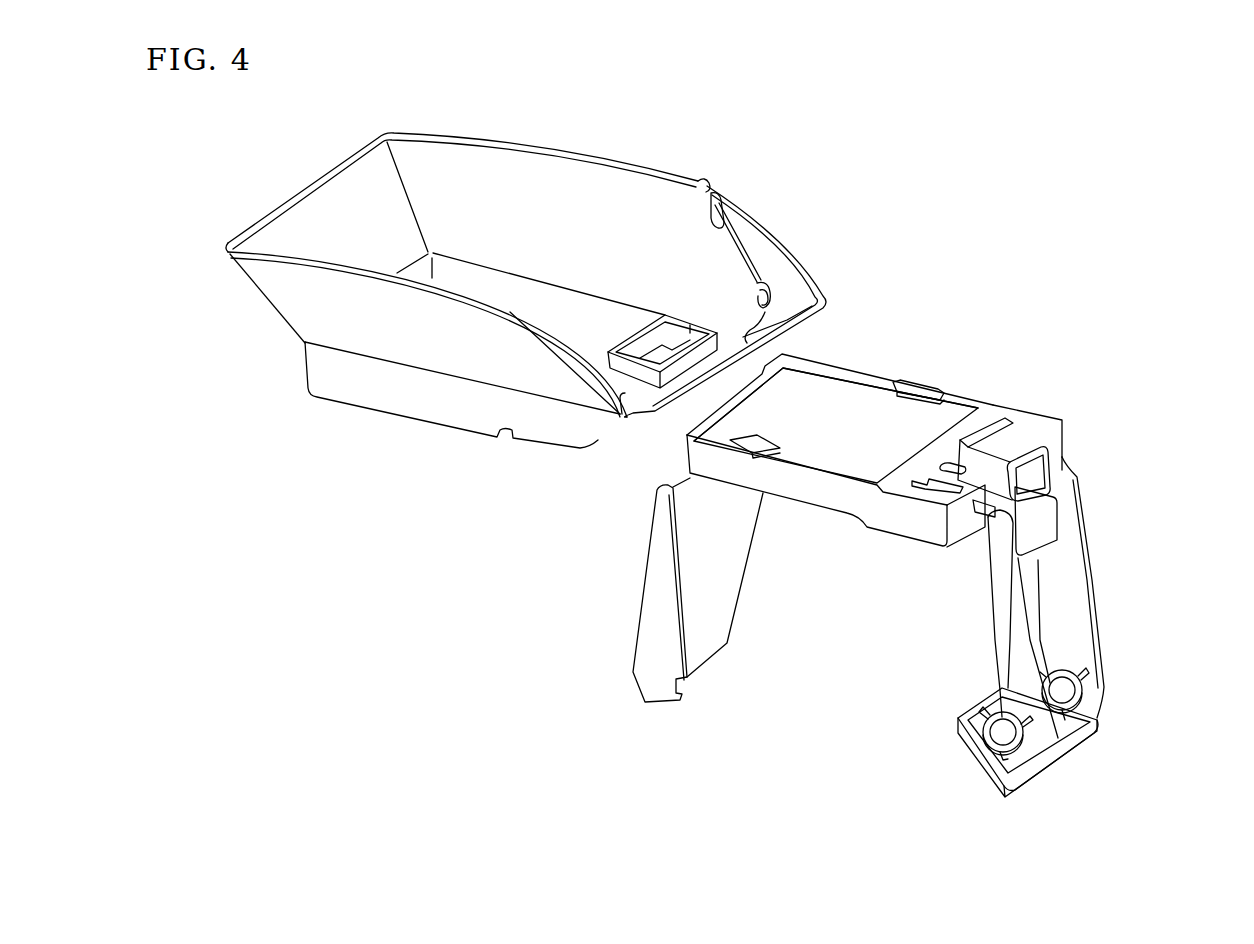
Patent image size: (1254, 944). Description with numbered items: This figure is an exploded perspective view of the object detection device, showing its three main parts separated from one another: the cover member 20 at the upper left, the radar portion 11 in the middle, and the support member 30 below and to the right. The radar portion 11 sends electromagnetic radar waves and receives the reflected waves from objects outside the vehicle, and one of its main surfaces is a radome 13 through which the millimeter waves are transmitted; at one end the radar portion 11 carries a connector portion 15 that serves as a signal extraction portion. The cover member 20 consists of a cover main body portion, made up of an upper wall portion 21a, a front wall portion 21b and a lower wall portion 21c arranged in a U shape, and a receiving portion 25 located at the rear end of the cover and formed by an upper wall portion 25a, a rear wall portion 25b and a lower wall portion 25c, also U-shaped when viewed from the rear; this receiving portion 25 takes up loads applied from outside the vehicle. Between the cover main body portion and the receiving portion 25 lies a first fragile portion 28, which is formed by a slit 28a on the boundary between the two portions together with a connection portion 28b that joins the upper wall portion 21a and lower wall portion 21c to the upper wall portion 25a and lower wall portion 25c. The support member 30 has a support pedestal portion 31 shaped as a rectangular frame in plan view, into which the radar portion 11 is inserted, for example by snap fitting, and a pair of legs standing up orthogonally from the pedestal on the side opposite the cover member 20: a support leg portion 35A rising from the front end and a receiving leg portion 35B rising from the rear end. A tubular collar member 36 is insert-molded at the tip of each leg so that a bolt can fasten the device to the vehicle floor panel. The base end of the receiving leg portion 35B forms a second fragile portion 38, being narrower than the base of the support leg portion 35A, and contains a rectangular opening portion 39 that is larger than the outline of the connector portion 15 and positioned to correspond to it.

The cover member 20 is at (549, 308).
The upper wall portion 21a is at (553, 158).
The front wall portion 21b is at (322, 211).
The lower wall portion 21c is at (272, 308).
The receiving portion 25 is at (751, 192).
The upper wall portion 25a is at (764, 240).
The rear wall portion 25b is at (792, 318).
The lower wall portion 25c is at (603, 380).
The first fragile portion 28 is at (770, 334).
The slit 28a is at (719, 195).
The connection portion 28b is at (688, 178).
The radar portion 11 is at (887, 451).
The radome 13 is at (868, 398).
The connector portion 15 is at (1028, 442).
The support member 30 is at (867, 627).
The support pedestal portion 31 is at (830, 512).
The support leg portion 35A is at (652, 583).
The receiving leg portion 35B is at (1100, 603).
The collar member 36 is at (1077, 693).
The second fragile portion 38 is at (1086, 506).
The opening portion 39 is at (1044, 524).